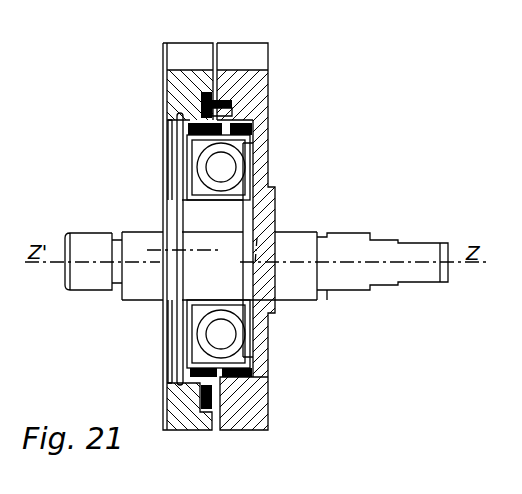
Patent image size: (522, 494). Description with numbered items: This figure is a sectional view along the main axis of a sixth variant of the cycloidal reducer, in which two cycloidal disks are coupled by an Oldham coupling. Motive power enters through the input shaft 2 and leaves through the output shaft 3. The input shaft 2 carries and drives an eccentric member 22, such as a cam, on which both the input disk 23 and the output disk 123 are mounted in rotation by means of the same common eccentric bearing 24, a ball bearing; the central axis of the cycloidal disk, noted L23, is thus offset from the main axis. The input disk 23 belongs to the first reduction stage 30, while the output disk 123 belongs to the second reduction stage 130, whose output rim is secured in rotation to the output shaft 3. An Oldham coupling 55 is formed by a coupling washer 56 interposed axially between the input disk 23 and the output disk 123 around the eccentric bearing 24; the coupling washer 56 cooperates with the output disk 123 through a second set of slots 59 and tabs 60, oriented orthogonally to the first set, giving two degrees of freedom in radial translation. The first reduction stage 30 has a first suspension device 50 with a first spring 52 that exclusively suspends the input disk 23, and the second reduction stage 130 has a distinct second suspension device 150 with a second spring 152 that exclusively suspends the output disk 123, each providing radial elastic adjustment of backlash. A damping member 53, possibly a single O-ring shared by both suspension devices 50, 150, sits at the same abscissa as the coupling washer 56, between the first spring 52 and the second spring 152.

The second reduction stage 130 is at (212, 44).
The first reduction stage 30 is at (266, 44).
The eccentric member 22 is at (200, 212).
The output shaft 3 is at (78, 243).
The input shaft 2 is at (416, 252).
The second spring 152 is at (172, 130).
The eccentric bearing 24 is at (168, 163).
The second suspension device 150 is at (163, 403).
The output disk 123 is at (167, 83).
The slots 59 is at (203, 98).
The input disk 23 is at (228, 98).
The Oldham coupling 55 is at (233, 101).
The coupling washer 56 is at (226, 112).
The first spring 52 is at (250, 130).
The first suspension device 50 is at (252, 374).
The tabs 60 is at (236, 150).
The damping member 53 is at (248, 357).
The central axis of the cycloidal disk L23 is at (257, 238).